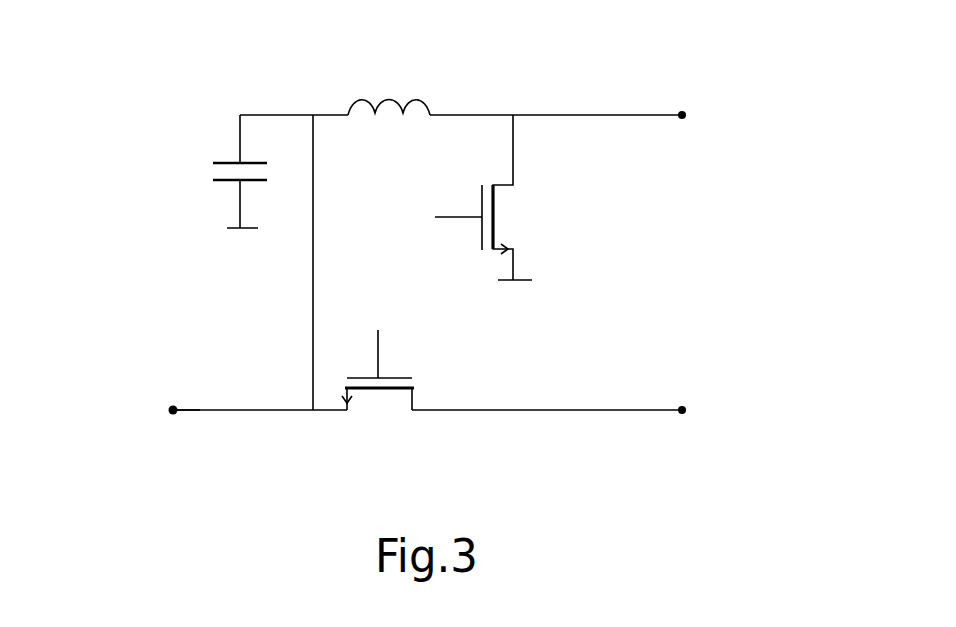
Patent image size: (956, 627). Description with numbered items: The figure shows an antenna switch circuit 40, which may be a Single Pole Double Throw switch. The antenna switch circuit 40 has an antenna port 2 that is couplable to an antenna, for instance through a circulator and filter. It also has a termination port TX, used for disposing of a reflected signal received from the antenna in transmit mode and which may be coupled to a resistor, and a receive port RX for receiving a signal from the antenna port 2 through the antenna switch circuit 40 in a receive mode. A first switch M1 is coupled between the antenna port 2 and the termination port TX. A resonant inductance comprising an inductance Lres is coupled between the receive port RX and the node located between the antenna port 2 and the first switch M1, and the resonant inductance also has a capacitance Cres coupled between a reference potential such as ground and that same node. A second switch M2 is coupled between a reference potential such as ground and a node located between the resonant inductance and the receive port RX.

The antenna port 2 is at (168, 403).
The antenna switch circuit 40 is at (508, 261).
The first switch M1 is at (378, 397).
The second switch M2 is at (506, 197).
The inductance Lres is at (389, 86).
The capacitance Cres is at (215, 171).
The receive port RX is at (708, 114).
The termination port TX is at (705, 412).